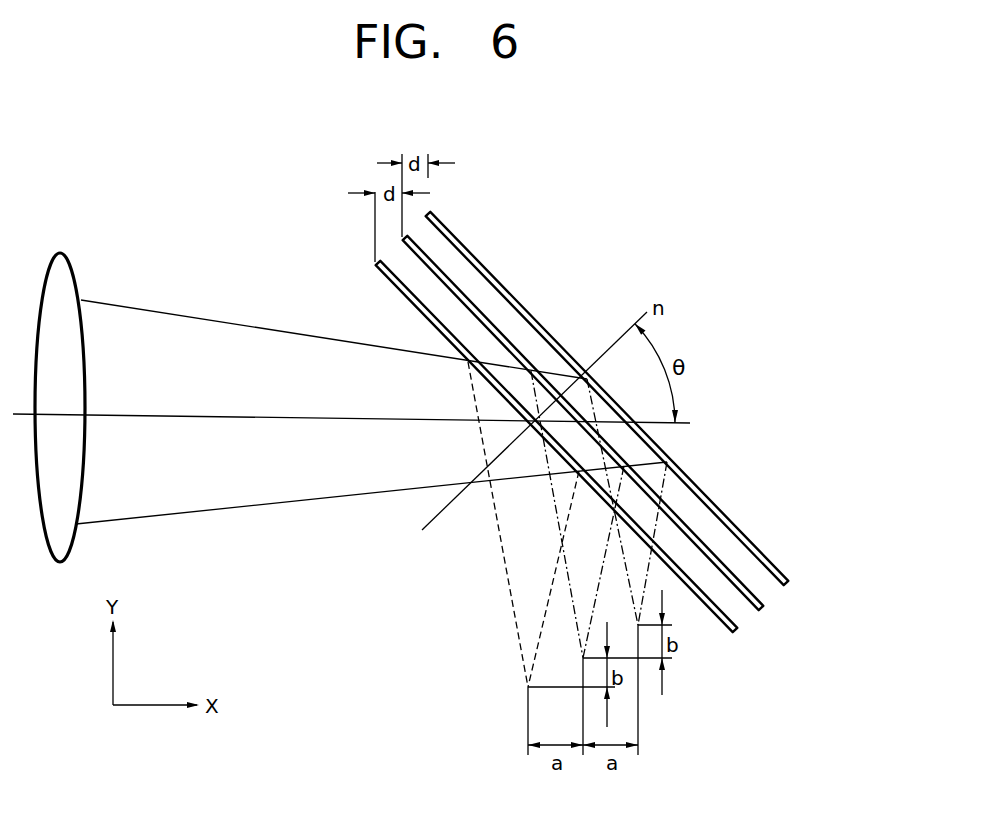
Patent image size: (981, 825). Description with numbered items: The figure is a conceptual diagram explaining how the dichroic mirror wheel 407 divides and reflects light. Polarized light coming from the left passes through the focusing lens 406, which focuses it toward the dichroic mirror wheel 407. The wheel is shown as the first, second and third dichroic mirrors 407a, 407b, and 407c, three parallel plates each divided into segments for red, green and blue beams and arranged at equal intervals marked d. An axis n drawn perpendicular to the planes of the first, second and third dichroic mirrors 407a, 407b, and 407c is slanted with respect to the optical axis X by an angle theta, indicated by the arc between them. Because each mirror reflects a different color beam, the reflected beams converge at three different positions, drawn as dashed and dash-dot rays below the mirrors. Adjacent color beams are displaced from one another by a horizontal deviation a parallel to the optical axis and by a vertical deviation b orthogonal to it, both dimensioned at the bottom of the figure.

The focusing lens 406 is at (62, 253).
The dichroic mirror wheel 407 is at (558, 446).
The first dichroic mirror 407a is at (737, 634).
The second dichroic mirror 407b is at (763, 611).
The third dichroic mirror 407c is at (788, 587).